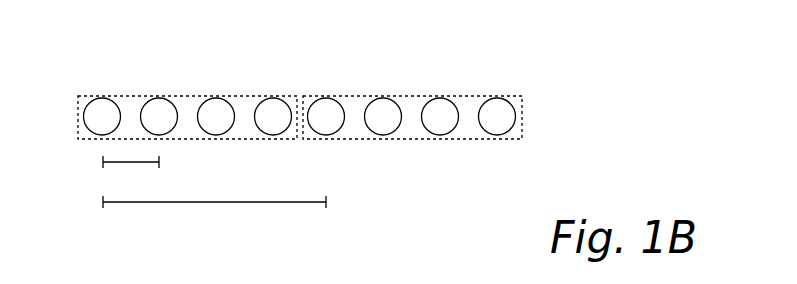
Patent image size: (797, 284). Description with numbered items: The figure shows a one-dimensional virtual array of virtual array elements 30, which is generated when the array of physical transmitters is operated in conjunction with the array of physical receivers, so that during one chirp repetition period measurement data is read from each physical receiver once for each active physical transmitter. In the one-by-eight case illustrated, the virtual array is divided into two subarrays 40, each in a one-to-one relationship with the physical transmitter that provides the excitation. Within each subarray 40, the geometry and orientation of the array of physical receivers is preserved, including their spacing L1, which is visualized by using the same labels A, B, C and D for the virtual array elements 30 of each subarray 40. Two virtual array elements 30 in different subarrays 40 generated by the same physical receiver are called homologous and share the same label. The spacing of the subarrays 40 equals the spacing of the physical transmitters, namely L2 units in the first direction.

The subarray 40 is at (138, 94).
The virtual array element 30 is at (327, 96).
The spacing of the physical receivers L1 is at (131, 173).
The spacing of the subarrays L2 is at (214, 215).